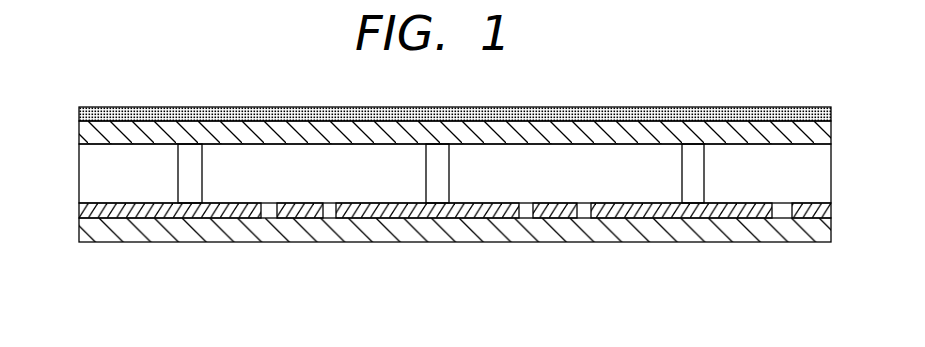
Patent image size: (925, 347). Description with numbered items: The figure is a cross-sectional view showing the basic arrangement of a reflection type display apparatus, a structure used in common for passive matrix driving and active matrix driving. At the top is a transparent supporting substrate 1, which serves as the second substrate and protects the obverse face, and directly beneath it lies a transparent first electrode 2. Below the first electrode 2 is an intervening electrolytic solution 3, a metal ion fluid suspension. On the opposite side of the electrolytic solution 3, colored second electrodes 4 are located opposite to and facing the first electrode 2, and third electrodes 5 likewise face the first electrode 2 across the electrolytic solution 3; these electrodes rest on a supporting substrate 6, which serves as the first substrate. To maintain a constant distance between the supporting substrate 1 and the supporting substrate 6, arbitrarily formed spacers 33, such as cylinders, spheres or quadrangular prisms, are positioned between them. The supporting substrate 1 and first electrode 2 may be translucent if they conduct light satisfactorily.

The transparent supporting substrate 1 is at (80, 117).
The first electrode 2 is at (84, 128).
The electrolytic solution 3 is at (92, 175).
The second electrodes 4 is at (236, 205).
The third electrodes 5 is at (304, 205).
The supporting substrate 6 is at (102, 227).
The spacers 33 is at (191, 192).